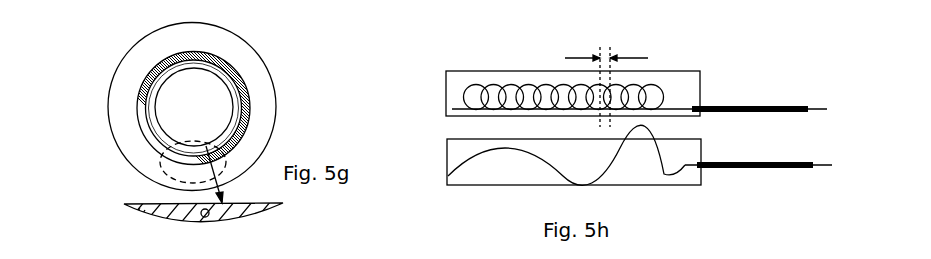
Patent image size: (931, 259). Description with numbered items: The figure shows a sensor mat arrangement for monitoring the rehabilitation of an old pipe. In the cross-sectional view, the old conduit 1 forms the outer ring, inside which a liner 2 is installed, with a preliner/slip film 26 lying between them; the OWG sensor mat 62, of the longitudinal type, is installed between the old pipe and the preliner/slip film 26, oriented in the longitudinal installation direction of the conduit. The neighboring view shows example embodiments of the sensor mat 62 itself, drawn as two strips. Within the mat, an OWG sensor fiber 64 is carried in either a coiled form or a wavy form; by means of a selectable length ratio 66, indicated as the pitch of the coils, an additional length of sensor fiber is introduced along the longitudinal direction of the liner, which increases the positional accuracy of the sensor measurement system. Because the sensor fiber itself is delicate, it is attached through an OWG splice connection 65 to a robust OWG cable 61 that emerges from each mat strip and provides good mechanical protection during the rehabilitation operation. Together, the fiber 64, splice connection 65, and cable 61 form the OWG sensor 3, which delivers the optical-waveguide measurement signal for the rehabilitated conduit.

In FIG. 5G, the conduit 1 is at (162, 43).
In FIG. 5G, the liner 2 is at (238, 85).
In FIG. 5G, the preliner/slip film 26 is at (143, 80).
In FIG. 5G, the OWG sensor mat (longitudinal type) 62 is at (132, 203).
In FIG. 5H, the OWG sensor mat (longitudinal type) 62 is at (455, 148).
In FIG. 5H, the OWG sensor fiber 64 is at (572, 95).
In FIG. 5H, the length ratio 66 is at (606, 76).
In FIG. 5H, the OWG splice connection 65 is at (692, 158).
In FIG. 5H, the OWG cable 61 is at (737, 162).
In FIG. 5H, the OWG sensor 3 is at (823, 155).